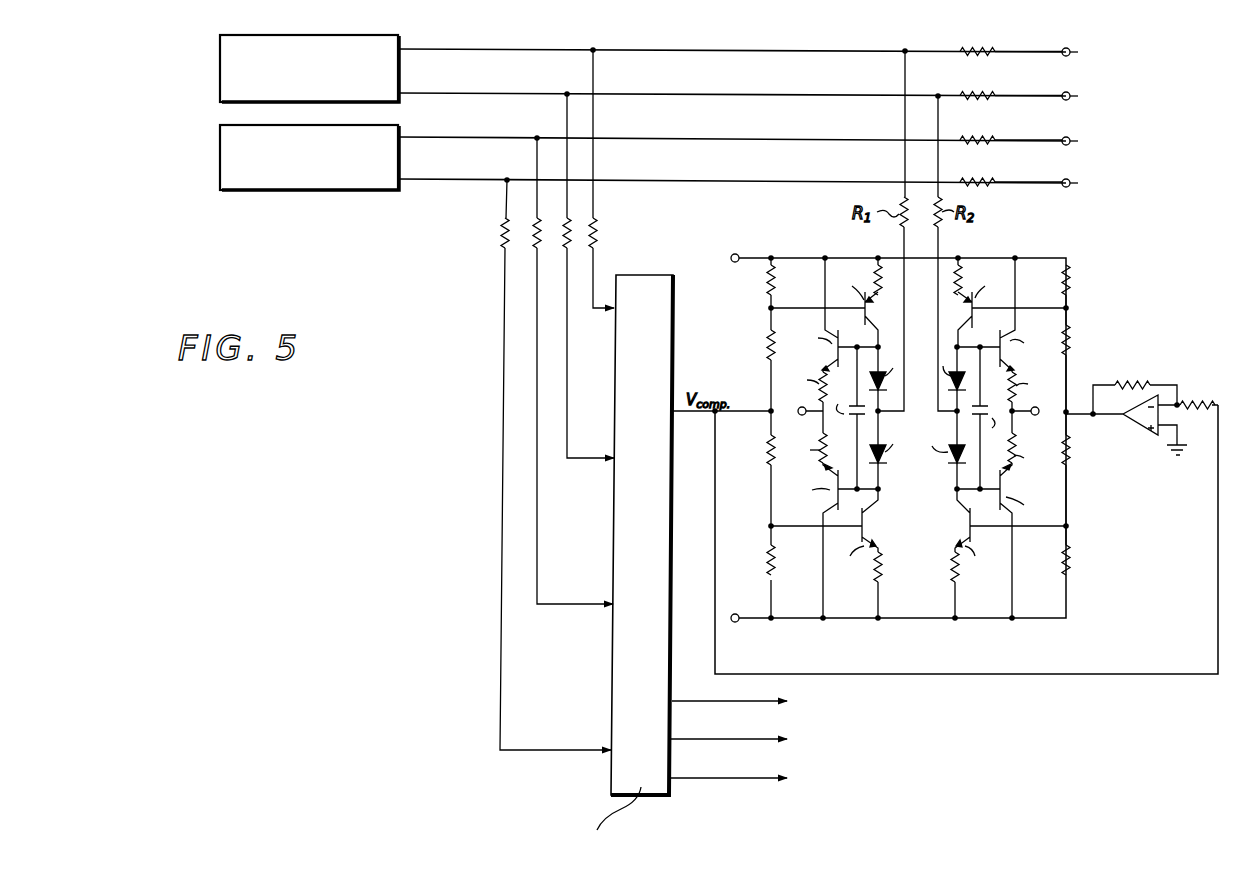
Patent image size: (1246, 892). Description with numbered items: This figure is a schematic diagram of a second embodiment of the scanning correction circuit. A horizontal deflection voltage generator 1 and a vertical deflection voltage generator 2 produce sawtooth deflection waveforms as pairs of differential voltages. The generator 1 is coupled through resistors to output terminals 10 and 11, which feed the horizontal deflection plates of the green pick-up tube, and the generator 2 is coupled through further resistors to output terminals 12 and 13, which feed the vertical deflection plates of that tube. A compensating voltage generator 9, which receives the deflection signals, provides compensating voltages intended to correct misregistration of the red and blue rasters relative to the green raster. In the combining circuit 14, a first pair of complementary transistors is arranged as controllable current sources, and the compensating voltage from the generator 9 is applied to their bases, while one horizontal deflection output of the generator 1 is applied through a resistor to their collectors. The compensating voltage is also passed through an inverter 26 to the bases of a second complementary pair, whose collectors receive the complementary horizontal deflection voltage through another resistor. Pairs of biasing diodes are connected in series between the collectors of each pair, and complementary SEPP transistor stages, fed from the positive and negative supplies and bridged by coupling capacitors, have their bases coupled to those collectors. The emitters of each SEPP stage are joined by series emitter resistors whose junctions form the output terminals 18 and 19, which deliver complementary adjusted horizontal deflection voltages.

The horizontal deflection voltage generator 1 is at (220, 66).
The vertical deflection voltage generator 2 is at (220, 155).
The compensating voltage generator 9 is at (640, 275).
The output terminal 10 is at (1007, 111).
The output terminal 11 is at (1023, 133).
The output terminal 12 is at (1033, 133).
The output terminal 13 is at (1033, 175).
The combining circuit 14 is at (884, 422).
The output terminal 18 is at (798, 411).
The output terminal 19 is at (1040, 414).
The inverter 26 is at (1140, 373).